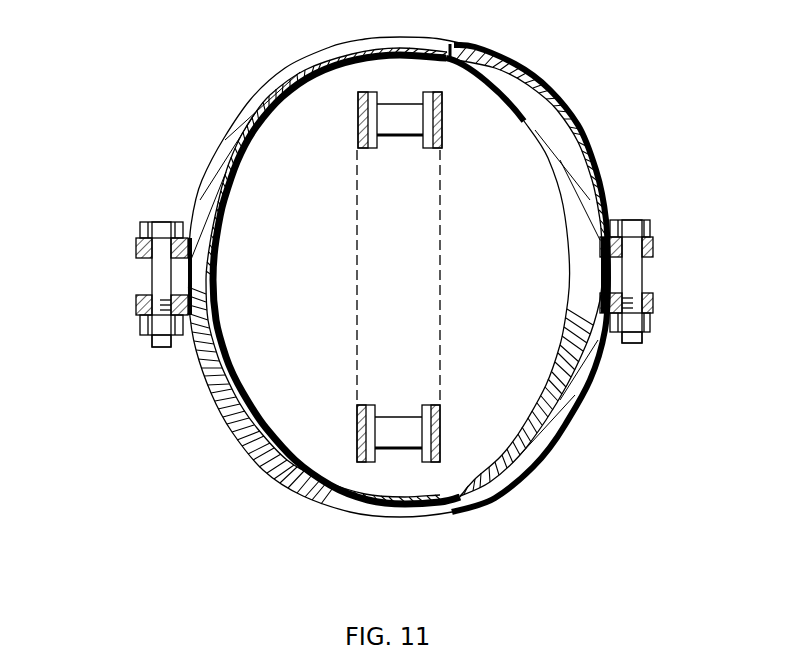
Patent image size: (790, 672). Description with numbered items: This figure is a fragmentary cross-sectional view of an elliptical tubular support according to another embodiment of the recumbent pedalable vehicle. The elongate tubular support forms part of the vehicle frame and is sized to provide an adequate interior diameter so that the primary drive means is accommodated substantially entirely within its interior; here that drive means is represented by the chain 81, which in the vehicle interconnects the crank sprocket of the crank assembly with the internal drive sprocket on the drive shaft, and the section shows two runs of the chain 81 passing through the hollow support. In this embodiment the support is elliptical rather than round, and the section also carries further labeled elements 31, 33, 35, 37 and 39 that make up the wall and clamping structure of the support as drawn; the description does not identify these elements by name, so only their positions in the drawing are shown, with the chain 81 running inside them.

The ring segments 31 is at (610, 478).
The band 33 is at (214, 42).
The lugs 35 is at (184, 342).
The bolts 37 is at (137, 250).
The nuts 39 is at (143, 222).
The chain 81 is at (442, 118).